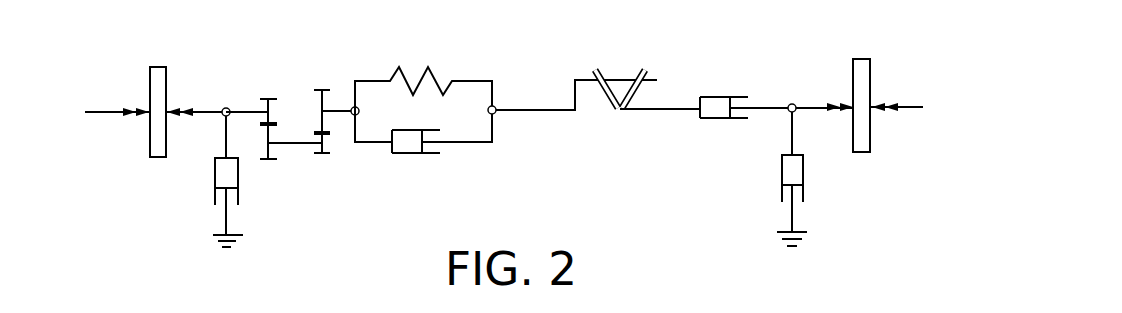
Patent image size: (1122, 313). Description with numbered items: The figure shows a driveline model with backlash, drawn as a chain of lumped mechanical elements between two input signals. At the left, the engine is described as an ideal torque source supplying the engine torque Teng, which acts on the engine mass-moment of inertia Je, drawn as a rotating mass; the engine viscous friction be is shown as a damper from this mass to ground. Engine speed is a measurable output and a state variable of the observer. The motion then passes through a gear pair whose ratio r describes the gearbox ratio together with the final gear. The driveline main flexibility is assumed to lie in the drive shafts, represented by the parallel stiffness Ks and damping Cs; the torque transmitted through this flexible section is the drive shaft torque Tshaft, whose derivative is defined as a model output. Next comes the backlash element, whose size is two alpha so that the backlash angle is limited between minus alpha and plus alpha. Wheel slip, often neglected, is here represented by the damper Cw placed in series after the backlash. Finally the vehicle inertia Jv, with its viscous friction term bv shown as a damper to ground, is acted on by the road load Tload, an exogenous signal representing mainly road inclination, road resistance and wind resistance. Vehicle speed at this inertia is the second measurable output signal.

The engine torque Teng is at (97, 112).
The engine mass-moment of inertia Je is at (163, 67).
The engine viscous friction be is at (214, 178).
The gear ratio r is at (297, 143).
The drive shaft stiffness Ks is at (437, 75).
The drive shaft damping Cs is at (413, 153).
The drive shaft torque Tshaft is at (542, 110).
The wheel slip damper Cw is at (717, 118).
The vehicle viscous friction bv is at (803, 170).
The vehicle inertia Jv is at (863, 59).
The road load Tload is at (908, 107).